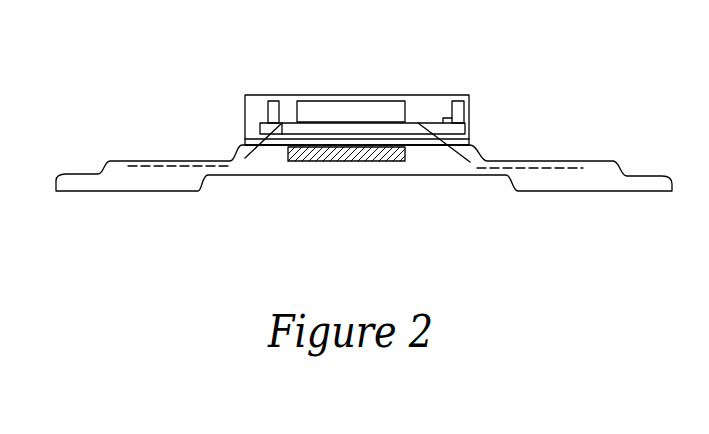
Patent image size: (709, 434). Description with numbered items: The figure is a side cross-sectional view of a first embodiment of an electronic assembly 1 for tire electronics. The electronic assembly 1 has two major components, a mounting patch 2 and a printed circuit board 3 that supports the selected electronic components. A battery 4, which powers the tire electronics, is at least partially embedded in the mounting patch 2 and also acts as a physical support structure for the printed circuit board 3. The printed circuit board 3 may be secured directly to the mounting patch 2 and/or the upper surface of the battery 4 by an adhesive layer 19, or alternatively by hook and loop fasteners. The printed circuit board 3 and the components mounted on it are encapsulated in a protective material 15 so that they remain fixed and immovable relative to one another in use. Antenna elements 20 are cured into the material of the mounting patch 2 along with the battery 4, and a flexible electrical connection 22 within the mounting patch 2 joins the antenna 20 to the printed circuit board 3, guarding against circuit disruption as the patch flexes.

The electronic assembly 1 is at (558, 95).
The mounting patch 2 is at (647, 176).
The printed circuit board 3 is at (258, 123).
The battery 4 is at (318, 156).
The protective material 15 is at (427, 95).
The adhesive layer 19 is at (244, 142).
The antenna element 20 is at (160, 167).
The connection 22 is at (444, 145).